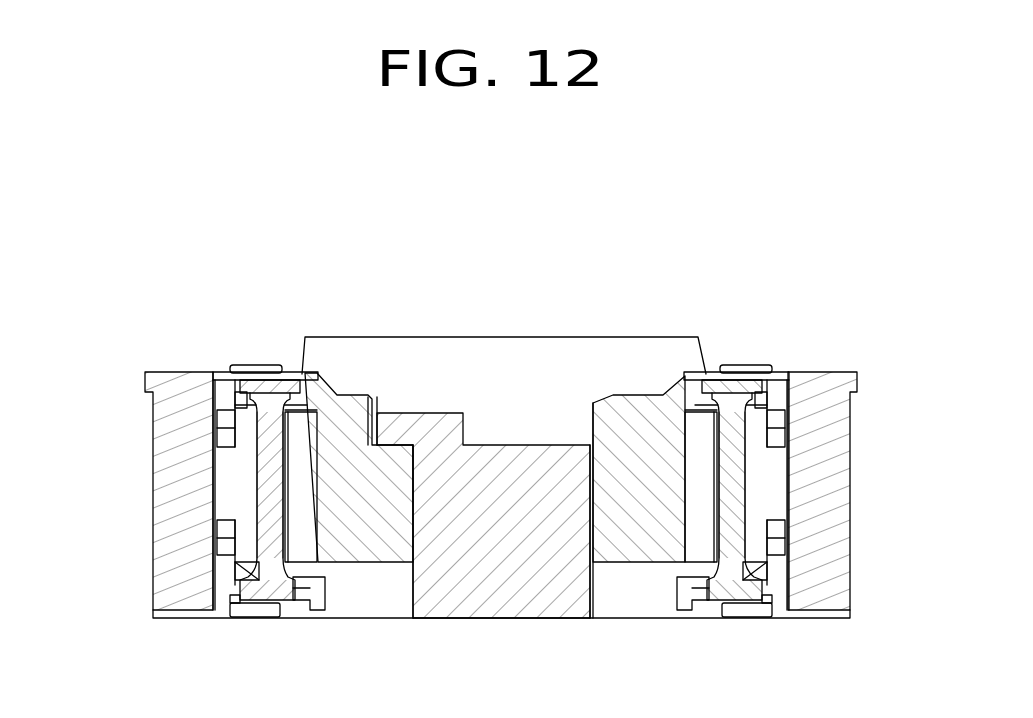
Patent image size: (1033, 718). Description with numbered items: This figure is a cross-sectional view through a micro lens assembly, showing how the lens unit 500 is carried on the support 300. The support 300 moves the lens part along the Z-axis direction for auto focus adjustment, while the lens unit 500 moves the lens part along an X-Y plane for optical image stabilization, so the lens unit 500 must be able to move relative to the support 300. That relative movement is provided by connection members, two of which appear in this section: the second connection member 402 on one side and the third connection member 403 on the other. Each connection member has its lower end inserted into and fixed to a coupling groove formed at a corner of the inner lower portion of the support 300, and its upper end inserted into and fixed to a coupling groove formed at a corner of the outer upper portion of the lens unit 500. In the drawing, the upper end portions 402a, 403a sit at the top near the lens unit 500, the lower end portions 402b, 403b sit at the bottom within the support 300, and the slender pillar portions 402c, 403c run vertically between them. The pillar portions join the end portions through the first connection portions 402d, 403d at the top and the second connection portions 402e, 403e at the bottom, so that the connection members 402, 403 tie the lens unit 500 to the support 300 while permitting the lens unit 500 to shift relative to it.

The support 300 is at (150, 495).
The lens unit 500 is at (485, 320).
The second connection member 402 is at (751, 458).
The upper end portion 402a is at (733, 387).
The lower end portion 402b is at (710, 600).
The pillar portion 402c is at (742, 503).
The first connection portion 402d is at (760, 405).
The second connection portion 402e is at (738, 590).
The third connection member 403 is at (251, 461).
The upper end portion 403a is at (266, 387).
The lower end portion 403b is at (296, 617).
The pillar portion 403c is at (265, 512).
The first connection portion 403d is at (240, 408).
The second connection portion 403e is at (262, 580).